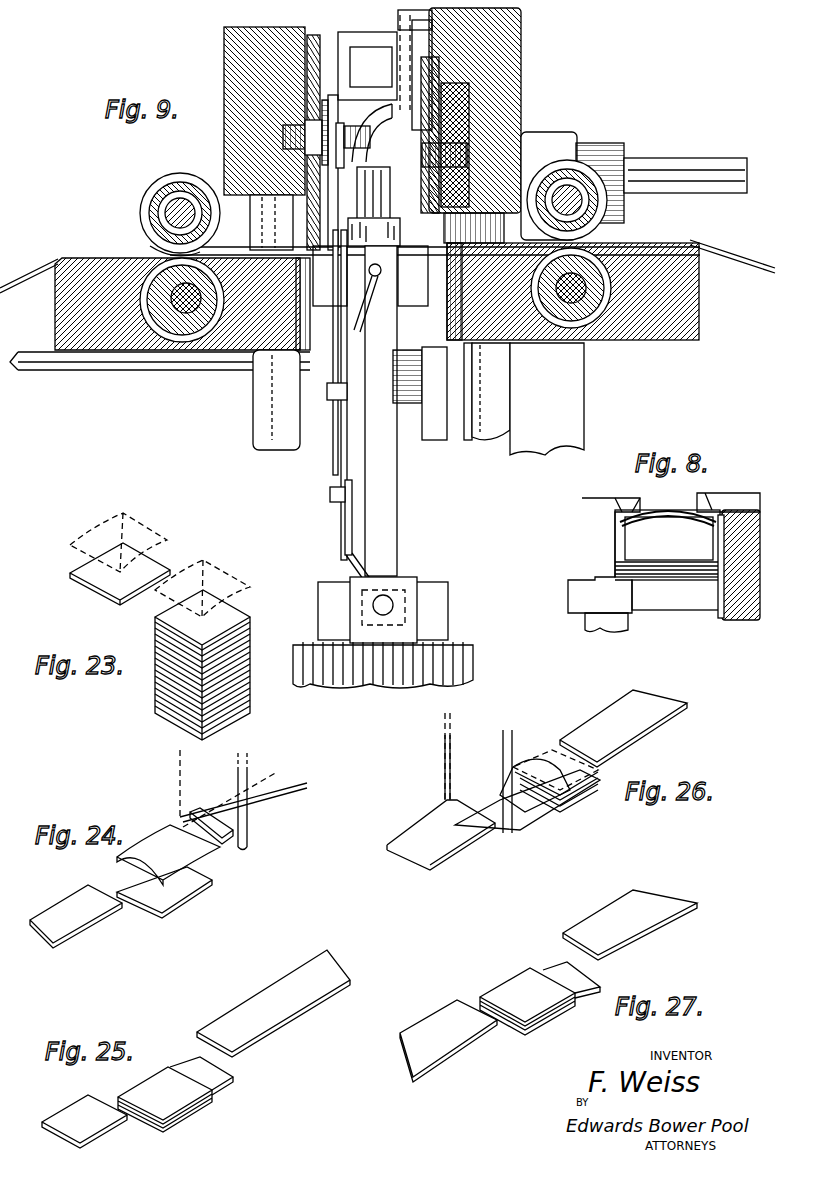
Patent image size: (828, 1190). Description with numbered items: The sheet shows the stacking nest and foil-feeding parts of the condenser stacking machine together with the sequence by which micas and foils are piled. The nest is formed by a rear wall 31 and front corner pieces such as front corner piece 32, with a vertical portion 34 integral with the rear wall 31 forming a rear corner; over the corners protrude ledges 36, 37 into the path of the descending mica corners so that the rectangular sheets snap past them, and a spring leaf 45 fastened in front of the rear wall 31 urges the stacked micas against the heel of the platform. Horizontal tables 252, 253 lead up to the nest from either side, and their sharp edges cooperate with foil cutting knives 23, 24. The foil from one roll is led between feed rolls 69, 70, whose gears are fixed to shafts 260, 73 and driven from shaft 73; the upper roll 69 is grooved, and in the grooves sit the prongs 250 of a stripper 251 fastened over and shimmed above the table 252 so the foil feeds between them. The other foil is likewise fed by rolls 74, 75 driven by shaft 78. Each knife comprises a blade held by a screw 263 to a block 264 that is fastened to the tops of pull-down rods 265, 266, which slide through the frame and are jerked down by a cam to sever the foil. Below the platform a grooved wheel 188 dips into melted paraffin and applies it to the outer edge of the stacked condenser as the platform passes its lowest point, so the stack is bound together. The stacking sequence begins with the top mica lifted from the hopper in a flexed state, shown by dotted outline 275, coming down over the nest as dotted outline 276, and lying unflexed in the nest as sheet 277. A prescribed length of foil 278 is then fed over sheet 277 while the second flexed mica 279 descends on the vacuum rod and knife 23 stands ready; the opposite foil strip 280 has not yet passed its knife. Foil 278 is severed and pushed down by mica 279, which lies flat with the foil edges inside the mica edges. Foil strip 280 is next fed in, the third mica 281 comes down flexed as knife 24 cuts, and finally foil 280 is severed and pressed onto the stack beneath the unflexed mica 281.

In FIG. 9, the foil cutting knife 23 is at (462, 162).
In FIG. 24, the foil cutting knife 23 is at (249, 800).
In FIG. 9, the foil cutting knife 24 is at (306, 211).
In FIG. 26, the foil cutting knife 24 is at (456, 763).
In FIG. 8, the rear wall 31 is at (752, 565).
In FIG. 8, the front corner piece 32 is at (592, 540).
In FIG. 8, the vertical portion 34 is at (712, 535).
In FIG. 8, the ledge 36 is at (620, 506).
In FIG. 8, the ledge 37 is at (714, 508).
In FIG. 8, the spring leaf 45 is at (718, 600).
In FIG. 9, the feed roll 69 is at (146, 194).
In FIG. 9, the feed roll 70 is at (205, 328).
In FIG. 9, the shaft 73 is at (185, 322).
In FIG. 9, the feed roll 74 is at (580, 175).
In FIG. 9, the feed roll 75 is at (590, 322).
In FIG. 9, the shaft 78 is at (585, 290).
In FIG. 9, the grooved wheel 188 is at (450, 660).
In FIG. 9, the prongs 250 is at (152, 250).
In FIG. 9, the stripper 251 is at (232, 255).
In FIG. 9, the horizontal table 252 is at (112, 258).
In FIG. 9, the horizontal table 253 is at (682, 292).
In FIG. 9, the shaft 260 is at (178, 200).
In FIG. 9, the screw 263 is at (440, 158).
In FIG. 9, the block 264 is at (508, 52).
In FIG. 9, the pull-down rod 265 is at (428, 238).
In FIG. 9, the pull-down rod 266 is at (466, 445).
In FIG. 23, the flexed mica sheet (dotted outline) 275 is at (211, 645).
In FIG. 23, the flexed mica sheet (dotted outline) 276 is at (160, 520).
In FIG. 23, the mica sheet 277 is at (90, 578).
In FIG. 24, the mica sheet 277 is at (198, 898).
In FIG. 27, the mica sheet 277 is at (585, 975).
In FIG. 9, the foil strip 278 is at (735, 258).
In FIG. 24, the foil strip 278 is at (222, 840).
In FIG. 25, the foil strip 278 is at (222, 1085).
In FIG. 24, the mica sheet 279 is at (148, 840).
In FIG. 25, the mica sheet 279 is at (135, 1090).
In FIG. 9, the foil strip 280 is at (40, 278).
In FIG. 24, the foil strip 280 is at (90, 920).
In FIG. 26, the foil strip 280 is at (515, 835).
In FIG. 25, the foil strip 280 is at (88, 1132).
In FIG. 27, the foil strip 280 is at (510, 1035).
In FIG. 26, the mica sheet 281 is at (530, 758).
In FIG. 27, the mica sheet 281 is at (515, 990).